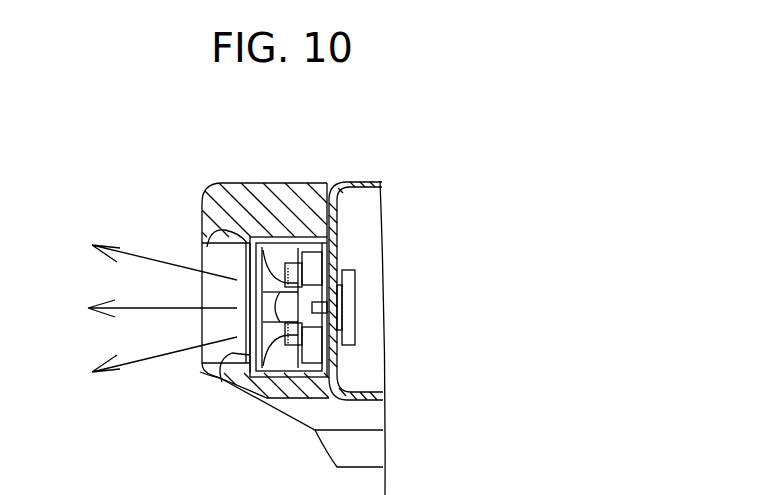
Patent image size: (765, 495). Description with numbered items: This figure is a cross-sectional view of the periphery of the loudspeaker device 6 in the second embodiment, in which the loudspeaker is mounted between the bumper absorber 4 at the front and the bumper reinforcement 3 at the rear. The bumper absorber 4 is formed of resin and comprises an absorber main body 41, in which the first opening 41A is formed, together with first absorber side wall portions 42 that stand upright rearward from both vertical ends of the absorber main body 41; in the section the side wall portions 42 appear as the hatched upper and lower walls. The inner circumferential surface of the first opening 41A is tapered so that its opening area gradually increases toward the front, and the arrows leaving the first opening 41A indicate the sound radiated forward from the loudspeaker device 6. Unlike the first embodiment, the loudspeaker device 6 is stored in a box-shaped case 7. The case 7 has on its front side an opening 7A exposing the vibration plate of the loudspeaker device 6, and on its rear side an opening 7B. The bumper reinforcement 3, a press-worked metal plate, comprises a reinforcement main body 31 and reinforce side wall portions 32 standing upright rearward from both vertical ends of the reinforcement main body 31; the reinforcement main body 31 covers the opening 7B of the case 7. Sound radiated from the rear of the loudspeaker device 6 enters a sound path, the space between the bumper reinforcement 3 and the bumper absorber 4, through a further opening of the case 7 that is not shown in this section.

The bumper reinforcement 3 is at (372, 182).
The bumper absorber 4 is at (231, 182).
The loudspeaker device 6 is at (312, 260).
The case 7 is at (282, 240).
The opening 7A is at (216, 374).
The opening 7B is at (326, 247).
The reinforcement main body 31 is at (338, 225).
The reinforce side wall portion 32 is at (362, 181).
The absorber main body 41 is at (213, 232).
The first opening 41A is at (208, 243).
The first absorber side wall portion 42 is at (317, 192).